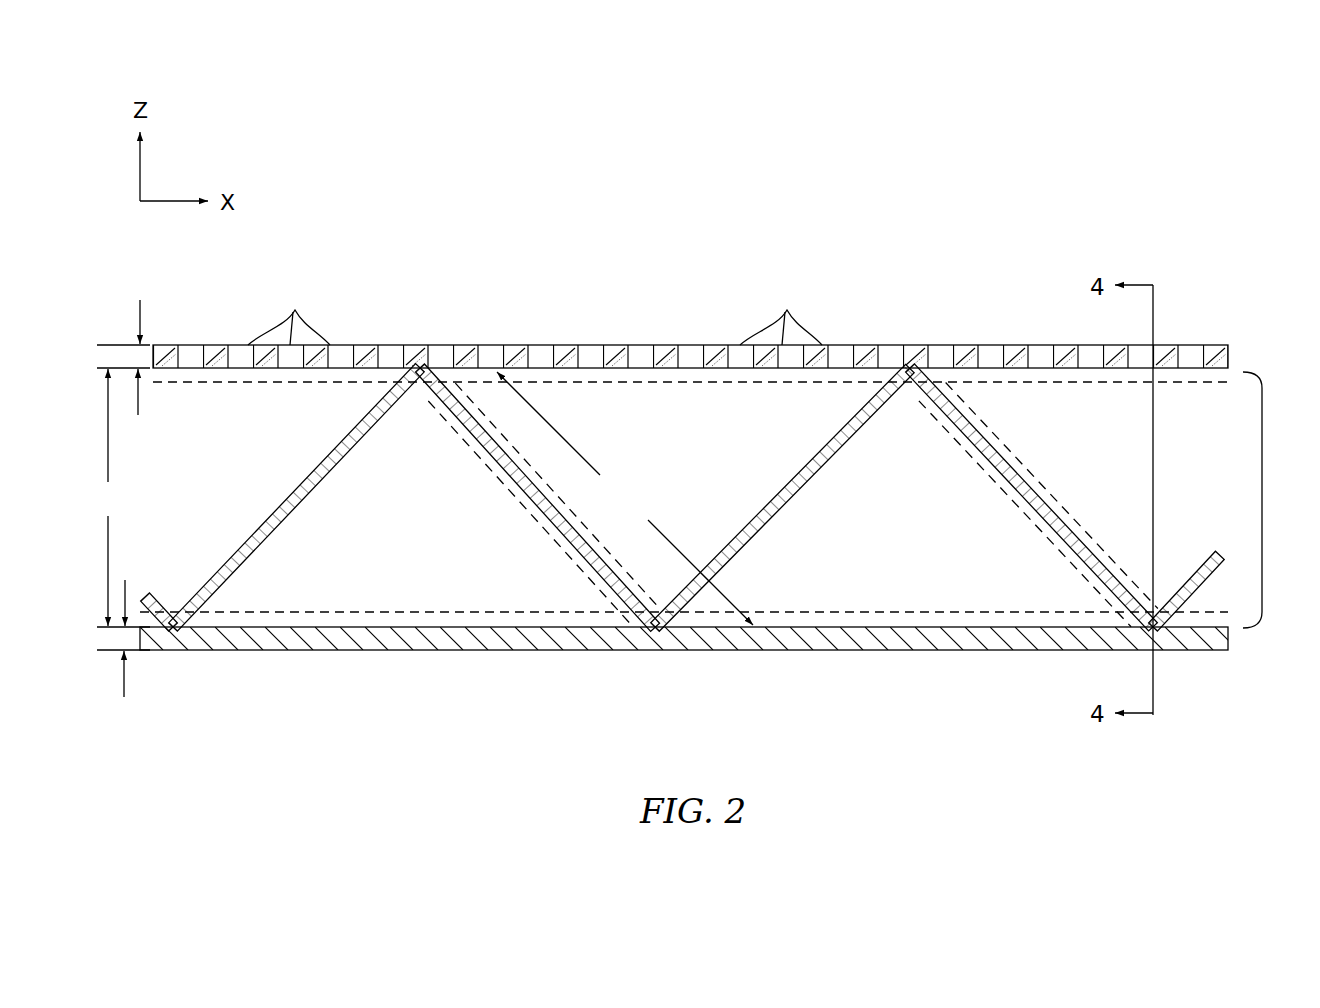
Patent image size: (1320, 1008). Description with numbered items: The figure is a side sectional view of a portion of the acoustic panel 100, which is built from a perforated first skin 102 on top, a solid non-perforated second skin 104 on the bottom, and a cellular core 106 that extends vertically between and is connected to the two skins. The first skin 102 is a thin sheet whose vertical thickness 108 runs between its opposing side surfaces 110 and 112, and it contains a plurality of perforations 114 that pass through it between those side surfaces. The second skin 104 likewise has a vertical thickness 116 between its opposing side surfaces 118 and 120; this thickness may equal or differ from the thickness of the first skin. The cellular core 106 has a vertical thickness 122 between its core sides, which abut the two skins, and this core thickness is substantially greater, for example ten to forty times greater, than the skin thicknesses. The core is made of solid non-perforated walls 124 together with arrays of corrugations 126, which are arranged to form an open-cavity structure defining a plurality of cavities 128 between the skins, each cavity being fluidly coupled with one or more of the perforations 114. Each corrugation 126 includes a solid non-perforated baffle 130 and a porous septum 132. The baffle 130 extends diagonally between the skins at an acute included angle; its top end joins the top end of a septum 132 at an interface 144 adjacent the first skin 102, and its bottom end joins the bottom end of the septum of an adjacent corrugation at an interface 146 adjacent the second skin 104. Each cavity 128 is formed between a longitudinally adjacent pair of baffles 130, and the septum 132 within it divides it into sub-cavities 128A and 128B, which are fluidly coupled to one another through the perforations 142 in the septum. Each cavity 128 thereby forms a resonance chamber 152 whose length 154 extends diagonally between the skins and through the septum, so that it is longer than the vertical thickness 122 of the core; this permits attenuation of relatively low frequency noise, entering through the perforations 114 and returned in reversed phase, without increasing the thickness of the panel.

The acoustic panel 100 is at (1030, 222).
The first skin 102 is at (1232, 355).
The second skin 104 is at (1232, 649).
The cellular core 106 is at (1281, 500).
The vertical thickness 108 is at (138, 305).
The side surface 110 is at (167, 343).
The side surface 112 is at (163, 376).
The perforations 114 is at (535, 312).
The vertical thickness 116 is at (124, 697).
The side surface 118 is at (152, 615).
The side surface 120 is at (157, 652).
The vertical thickness 122 is at (108, 497).
The walls 124 is at (473, 584).
The corrugations 126 is at (470, 400).
The cavities 128 is at (383, 630).
The sub-cavity 128A is at (665, 434).
The sub-cavity 128B is at (682, 544).
The baffle 130 is at (552, 522).
The septum 132 is at (298, 510).
The perforations 142 is at (803, 478).
The interface 144 is at (404, 356).
The interface 146 is at (645, 632).
The resonance chamber 152 is at (773, 614).
The length 154 is at (625, 498).